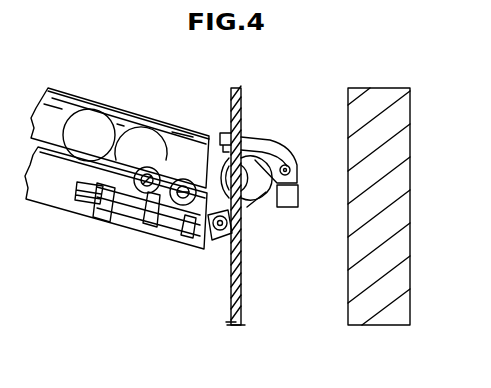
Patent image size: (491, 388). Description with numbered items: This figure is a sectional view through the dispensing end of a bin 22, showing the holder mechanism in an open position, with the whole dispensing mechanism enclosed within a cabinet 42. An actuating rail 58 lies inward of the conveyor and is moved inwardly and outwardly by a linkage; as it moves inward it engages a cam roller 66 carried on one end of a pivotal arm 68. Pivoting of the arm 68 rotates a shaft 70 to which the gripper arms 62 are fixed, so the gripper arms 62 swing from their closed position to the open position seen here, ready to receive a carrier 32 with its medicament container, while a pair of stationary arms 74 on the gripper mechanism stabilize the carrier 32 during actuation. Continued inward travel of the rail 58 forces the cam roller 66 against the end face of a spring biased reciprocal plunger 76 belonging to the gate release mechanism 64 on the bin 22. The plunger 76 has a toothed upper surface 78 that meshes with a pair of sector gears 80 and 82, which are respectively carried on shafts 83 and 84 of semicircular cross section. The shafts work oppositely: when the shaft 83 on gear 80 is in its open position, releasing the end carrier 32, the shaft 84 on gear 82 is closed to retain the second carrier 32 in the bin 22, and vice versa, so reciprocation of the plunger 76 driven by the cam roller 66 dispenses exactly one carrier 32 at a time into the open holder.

The bin 22 is at (62, 88).
The carrier 32 is at (90, 120).
The cabinet 42 is at (377, 326).
The actuating rail 58 is at (237, 311).
The gripper arm 62 is at (258, 135).
The gate release mechanism 64 is at (103, 221).
The cam roller 66 is at (220, 234).
The pivotal arm 68 is at (242, 190).
The shaft 70 is at (292, 164).
The stationary arm 74 is at (273, 152).
The plunger 76 is at (85, 203).
The toothed upper surface 78 is at (125, 227).
The sector gear 80 is at (181, 236).
The sector gear 82 is at (133, 226).
The shaft 83 is at (187, 179).
The shaft 84 is at (147, 167).